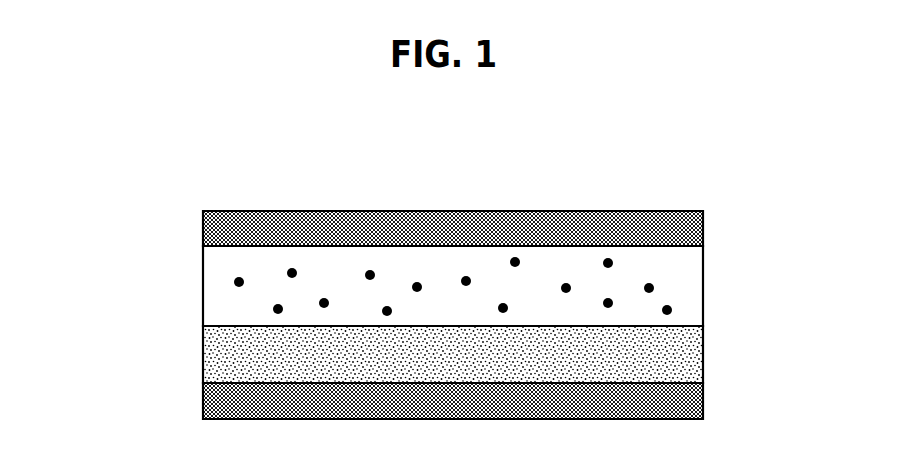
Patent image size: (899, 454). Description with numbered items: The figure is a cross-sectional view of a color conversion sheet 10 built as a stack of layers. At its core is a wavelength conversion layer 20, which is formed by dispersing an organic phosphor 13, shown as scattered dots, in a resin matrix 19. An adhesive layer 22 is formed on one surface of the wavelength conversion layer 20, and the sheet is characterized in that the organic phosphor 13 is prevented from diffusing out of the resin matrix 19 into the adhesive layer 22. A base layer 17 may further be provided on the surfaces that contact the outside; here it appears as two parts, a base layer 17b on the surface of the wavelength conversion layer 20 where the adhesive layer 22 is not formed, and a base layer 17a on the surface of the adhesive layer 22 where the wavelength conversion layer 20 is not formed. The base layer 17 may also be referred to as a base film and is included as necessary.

The color conversion sheet 10 is at (441, 268).
The base layer 17 is at (366, 315).
The base layer 17a is at (401, 401).
The base layer 17b is at (203, 229).
The resin matrix 19 is at (682, 260).
The organic phosphor 13 is at (654, 288).
The wavelength conversion layer 20 is at (528, 286).
The adhesive layer 22 is at (686, 353).